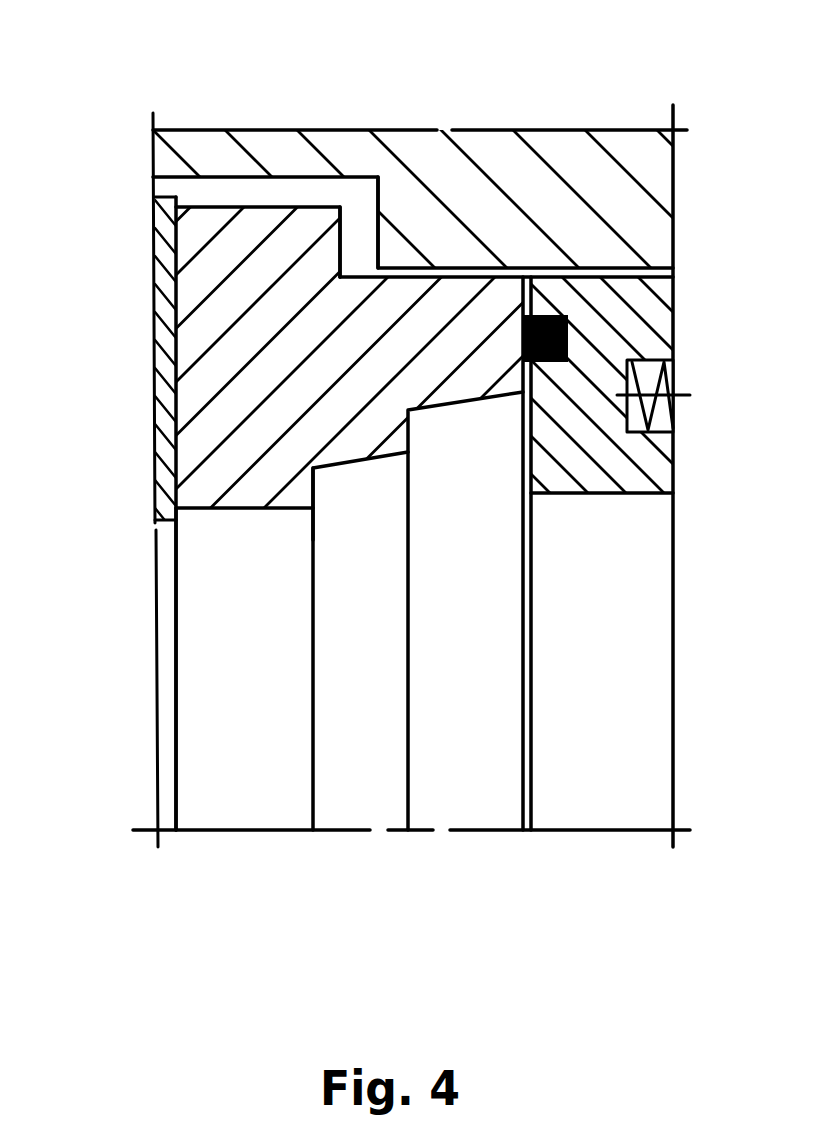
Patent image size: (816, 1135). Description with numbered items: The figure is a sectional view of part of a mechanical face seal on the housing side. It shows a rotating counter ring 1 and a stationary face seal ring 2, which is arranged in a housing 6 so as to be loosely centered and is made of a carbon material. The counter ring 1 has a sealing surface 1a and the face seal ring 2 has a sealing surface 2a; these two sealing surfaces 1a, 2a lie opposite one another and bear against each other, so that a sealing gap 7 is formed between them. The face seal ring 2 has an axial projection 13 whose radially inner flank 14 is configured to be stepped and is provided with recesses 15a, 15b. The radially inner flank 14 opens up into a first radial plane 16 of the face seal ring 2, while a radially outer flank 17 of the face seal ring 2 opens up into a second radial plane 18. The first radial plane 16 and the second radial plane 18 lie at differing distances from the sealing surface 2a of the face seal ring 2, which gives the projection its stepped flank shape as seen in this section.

The rotating counter ring 1 is at (155, 252).
The sealing surface 1a is at (173, 197).
The stationary face seal ring 2 is at (250, 233).
The sealing surface 2a is at (180, 343).
The housing 6 is at (550, 143).
The sealing gap 7 is at (180, 512).
The axial projection 13 is at (434, 353).
The radially inner flank 14 is at (350, 467).
The recess 15a is at (383, 457).
The recess 15b is at (473, 400).
The first radial plane 16 is at (318, 483).
The radially outer flank 17 is at (369, 272).
The second radial plane 18 is at (351, 272).